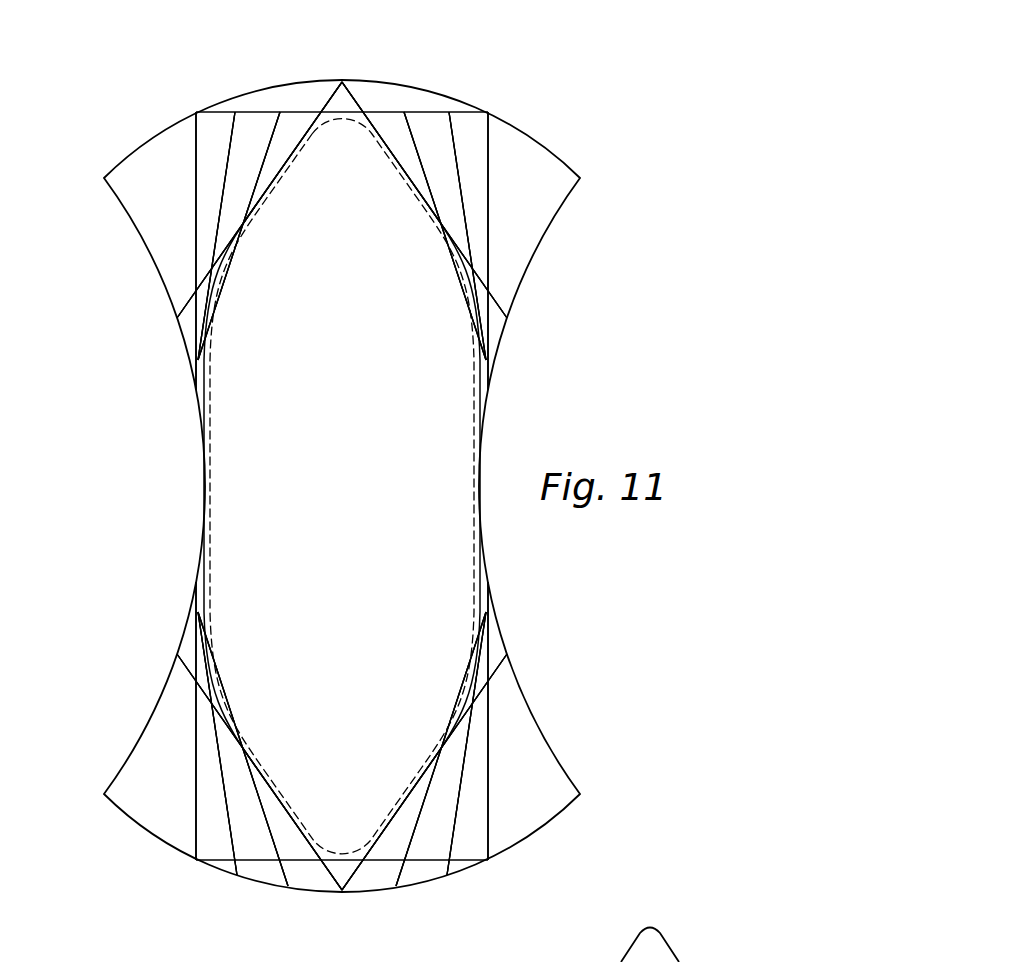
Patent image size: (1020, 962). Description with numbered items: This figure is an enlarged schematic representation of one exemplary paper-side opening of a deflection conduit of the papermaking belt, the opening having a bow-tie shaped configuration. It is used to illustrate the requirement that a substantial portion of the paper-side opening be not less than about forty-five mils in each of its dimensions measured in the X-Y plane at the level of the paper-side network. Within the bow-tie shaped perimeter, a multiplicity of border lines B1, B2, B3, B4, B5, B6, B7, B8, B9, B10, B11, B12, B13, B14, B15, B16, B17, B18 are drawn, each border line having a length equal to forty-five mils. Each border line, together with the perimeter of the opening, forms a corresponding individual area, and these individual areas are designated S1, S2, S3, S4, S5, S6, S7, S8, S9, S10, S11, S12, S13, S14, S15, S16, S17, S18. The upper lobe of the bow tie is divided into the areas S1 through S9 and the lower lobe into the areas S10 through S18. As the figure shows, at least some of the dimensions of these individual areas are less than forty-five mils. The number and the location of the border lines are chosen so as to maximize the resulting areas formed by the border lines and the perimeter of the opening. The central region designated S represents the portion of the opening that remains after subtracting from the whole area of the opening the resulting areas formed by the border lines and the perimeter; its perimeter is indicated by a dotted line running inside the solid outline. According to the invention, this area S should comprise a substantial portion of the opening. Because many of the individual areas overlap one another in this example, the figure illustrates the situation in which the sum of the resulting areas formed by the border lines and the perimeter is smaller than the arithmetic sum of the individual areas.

The substantial portion of the paper-side opening S is at (342, 486).
The individual area S1 is at (173, 251).
The individual area S2 is at (215, 251).
The individual area S3 is at (239, 236).
The individual area S4 is at (342, 200).
The individual area S5 is at (259, 221).
The individual area S6 is at (424, 221).
The individual area S7 is at (445, 236).
The individual area S8 is at (472, 251).
The individual area S9 is at (516, 251).
The individual area S10 is at (521, 721).
The individual area S11 is at (438, 728).
The individual area S12 is at (441, 749).
The individual area S13 is at (342, 772).
The individual area S14 is at (424, 751).
The individual area S15 is at (259, 751).
The individual area S16 is at (243, 749).
The individual area S17 is at (251, 728).
The individual area S18 is at (164, 721).
The border line B1 is at (192, 178).
The border line B2 is at (230, 126).
The border line B3 is at (276, 108).
The border line B4 is at (298, 108).
The border line B5 is at (315, 110).
The border line B6 is at (377, 110).
The border line B7 is at (414, 112).
The border line B8 is at (458, 120).
The border line B9 is at (494, 143).
The border line B10 is at (492, 810).
The border line B11 is at (460, 815).
The border line B12 is at (432, 790).
The border line B13 is at (428, 862).
The border line B14 is at (372, 850).
The border line B15 is at (314, 850).
The border line B16 is at (272, 857).
The border line B17 is at (224, 815).
The border line B18 is at (192, 797).